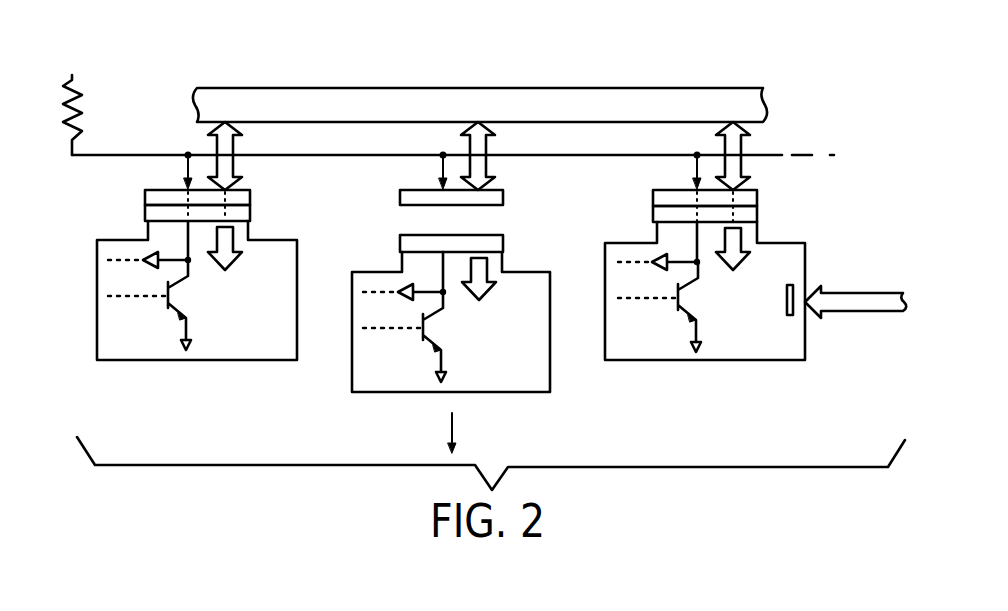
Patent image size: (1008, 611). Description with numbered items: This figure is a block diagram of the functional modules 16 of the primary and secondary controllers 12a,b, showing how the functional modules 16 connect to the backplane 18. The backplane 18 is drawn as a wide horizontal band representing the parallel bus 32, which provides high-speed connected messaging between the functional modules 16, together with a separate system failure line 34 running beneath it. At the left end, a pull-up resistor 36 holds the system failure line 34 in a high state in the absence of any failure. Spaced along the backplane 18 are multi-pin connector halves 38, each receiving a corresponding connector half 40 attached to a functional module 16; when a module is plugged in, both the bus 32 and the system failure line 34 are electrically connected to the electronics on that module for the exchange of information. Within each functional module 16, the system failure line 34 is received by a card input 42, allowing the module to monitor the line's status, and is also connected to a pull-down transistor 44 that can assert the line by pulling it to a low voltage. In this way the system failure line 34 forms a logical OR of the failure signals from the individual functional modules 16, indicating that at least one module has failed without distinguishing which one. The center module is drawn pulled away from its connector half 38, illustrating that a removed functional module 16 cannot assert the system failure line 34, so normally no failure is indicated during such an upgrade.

The primary and secondary controllers 12a,b is at (348, 65).
The functional module 16 is at (145, 362).
The backplane 18 is at (453, 84).
The parallel bus 32 is at (629, 93).
The system failure line 34 is at (336, 155).
The pull-up resistor 36 is at (76, 84).
The multi-pin connector half 38 is at (252, 195).
The connector half 40 is at (250, 214).
The card input 42 is at (144, 254).
The pull-down transistor 44 is at (166, 312).